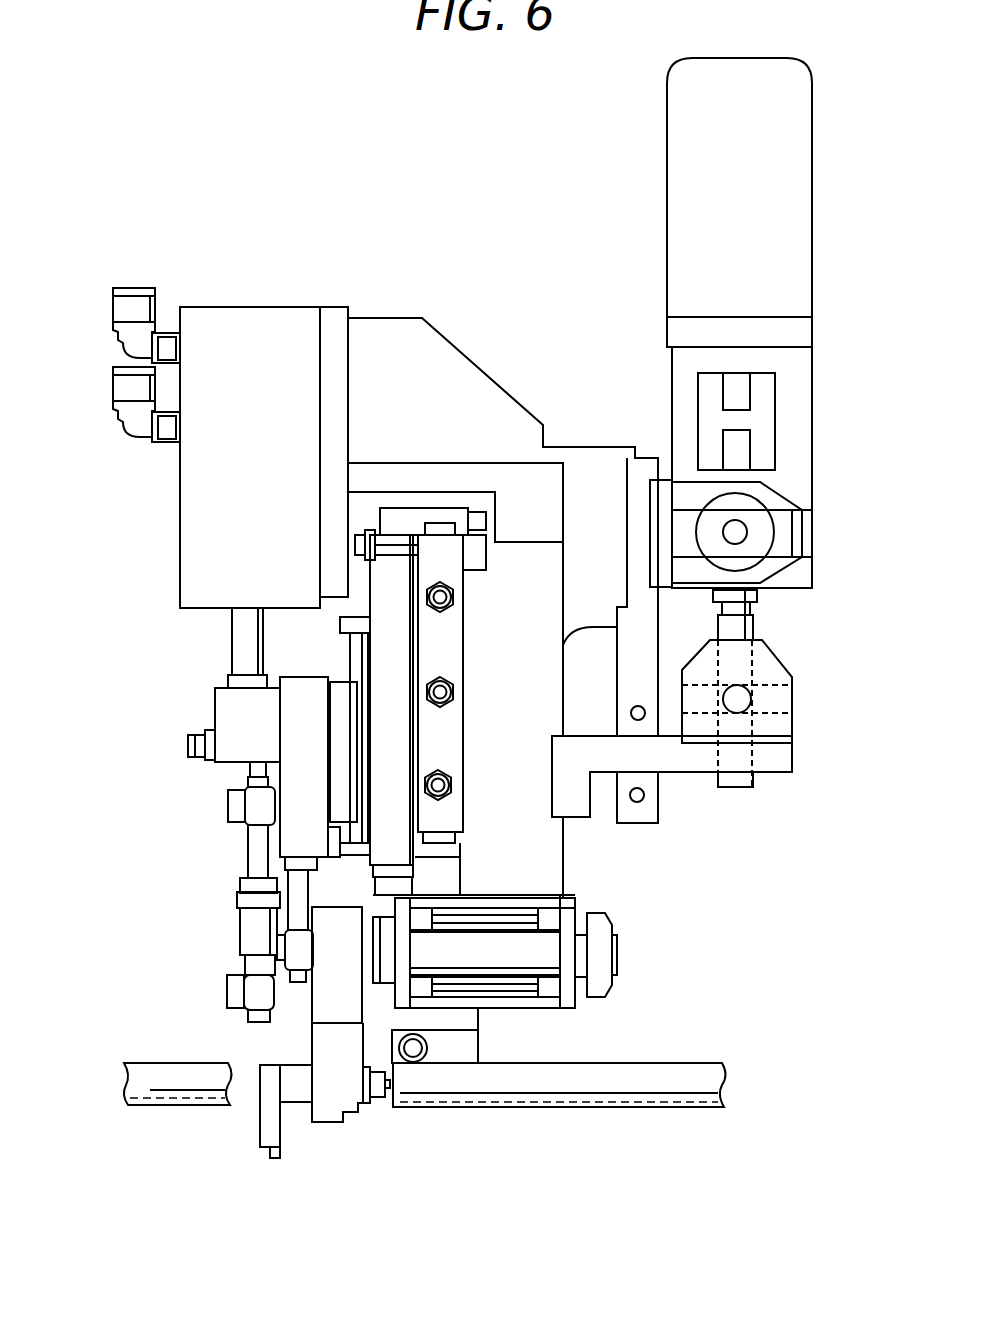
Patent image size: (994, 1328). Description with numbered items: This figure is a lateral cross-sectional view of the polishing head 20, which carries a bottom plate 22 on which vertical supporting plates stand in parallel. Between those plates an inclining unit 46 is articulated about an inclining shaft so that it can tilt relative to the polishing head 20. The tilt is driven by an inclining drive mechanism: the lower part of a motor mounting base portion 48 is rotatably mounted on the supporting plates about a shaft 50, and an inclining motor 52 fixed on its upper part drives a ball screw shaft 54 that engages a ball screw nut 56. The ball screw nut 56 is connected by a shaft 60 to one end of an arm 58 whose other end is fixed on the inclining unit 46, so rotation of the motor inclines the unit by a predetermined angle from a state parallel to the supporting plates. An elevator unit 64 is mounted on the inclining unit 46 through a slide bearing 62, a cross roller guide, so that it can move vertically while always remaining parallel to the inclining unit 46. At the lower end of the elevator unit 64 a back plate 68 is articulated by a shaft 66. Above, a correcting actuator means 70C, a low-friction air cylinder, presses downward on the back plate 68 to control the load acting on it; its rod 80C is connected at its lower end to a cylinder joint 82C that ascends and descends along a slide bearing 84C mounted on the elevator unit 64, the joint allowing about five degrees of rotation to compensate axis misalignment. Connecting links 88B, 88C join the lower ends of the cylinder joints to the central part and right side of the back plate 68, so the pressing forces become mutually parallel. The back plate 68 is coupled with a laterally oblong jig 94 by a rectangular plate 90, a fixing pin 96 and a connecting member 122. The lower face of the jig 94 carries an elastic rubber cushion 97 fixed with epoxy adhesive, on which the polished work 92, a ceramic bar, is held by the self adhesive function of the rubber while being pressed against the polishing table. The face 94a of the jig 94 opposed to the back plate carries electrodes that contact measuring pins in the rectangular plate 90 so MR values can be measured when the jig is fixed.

The polishing head 20 is at (190, 685).
The bottom plate 22 is at (665, 1100).
The inclining unit 46 is at (552, 558).
The motor mounting base portion 48 is at (810, 371).
The shaft 50 is at (742, 532).
The inclining motor 52 is at (806, 120).
The ball screw shaft 54 is at (745, 628).
The ball screw nut 56 is at (795, 688).
The arm 58 is at (677, 762).
The shaft 60 is at (745, 705).
The slide bearing 62 is at (455, 822).
The elevator unit 64 is at (403, 813).
The shaft 66 is at (612, 952).
The back plate 68 is at (320, 1013).
The correcting actuator means 70C is at (263, 308).
The rod 80C is at (237, 641).
The cylinder joint 82C is at (212, 712).
The slide bearing 84C is at (348, 652).
The connecting link 88B is at (297, 885).
The connecting link 88C is at (252, 930).
The rectangular plate 90 is at (355, 1098).
The polished work 92 is at (278, 1160).
The laterally oblong jig 94 is at (260, 1140).
The face 94a is at (285, 1115).
The fixing pin 96 is at (378, 1097).
The rubber cushion 97 is at (272, 1150).
The connecting member 122 is at (302, 1092).